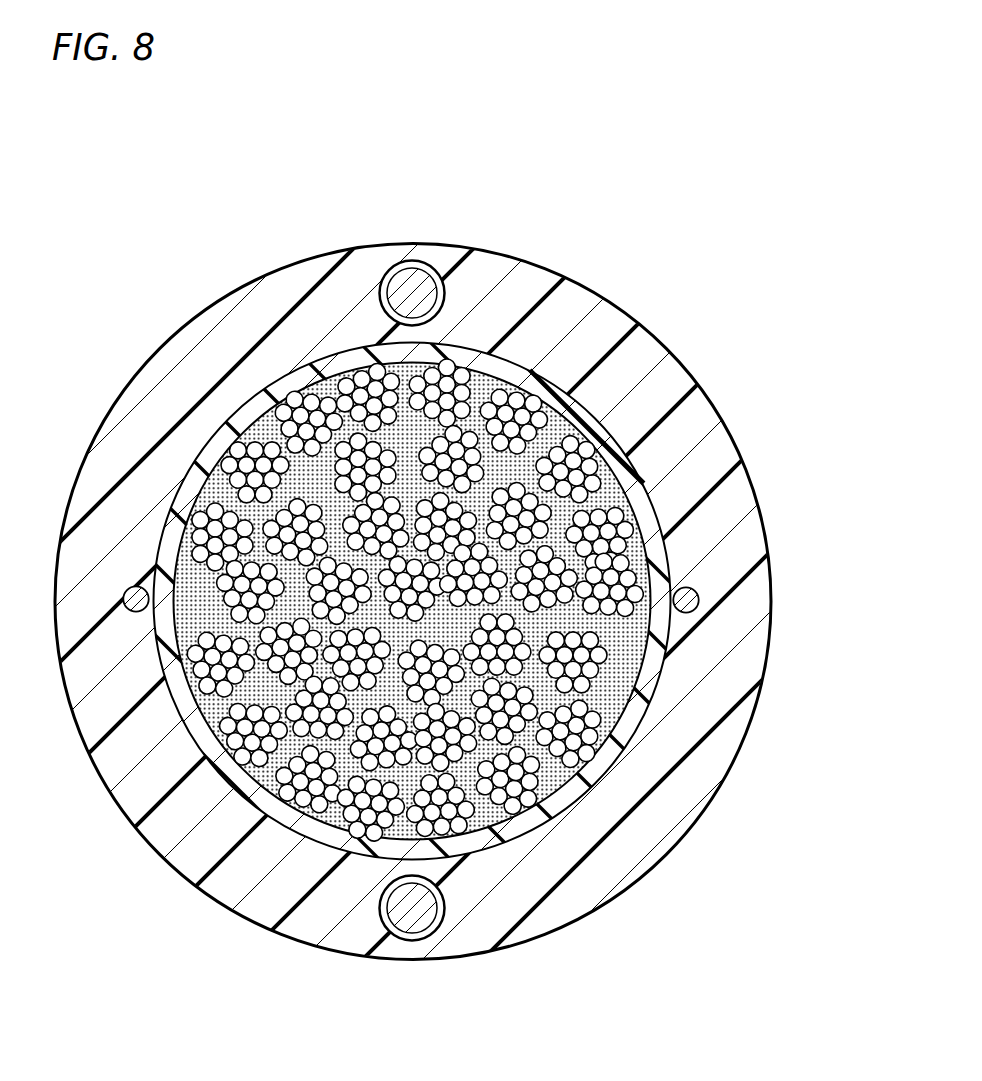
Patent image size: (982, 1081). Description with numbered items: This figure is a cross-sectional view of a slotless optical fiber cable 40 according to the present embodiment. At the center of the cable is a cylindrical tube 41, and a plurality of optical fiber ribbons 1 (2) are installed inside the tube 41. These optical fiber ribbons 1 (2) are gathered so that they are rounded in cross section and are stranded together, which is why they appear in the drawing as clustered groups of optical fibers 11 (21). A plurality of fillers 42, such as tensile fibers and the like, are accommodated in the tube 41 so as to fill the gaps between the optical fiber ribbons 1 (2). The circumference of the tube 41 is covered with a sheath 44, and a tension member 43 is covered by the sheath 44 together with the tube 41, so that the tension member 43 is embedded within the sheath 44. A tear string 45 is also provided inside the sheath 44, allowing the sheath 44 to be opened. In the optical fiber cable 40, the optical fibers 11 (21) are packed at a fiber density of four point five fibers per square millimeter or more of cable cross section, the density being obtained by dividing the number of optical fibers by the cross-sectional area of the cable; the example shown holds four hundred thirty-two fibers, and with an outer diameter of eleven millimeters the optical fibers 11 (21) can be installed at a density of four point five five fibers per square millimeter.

The slotless optical fiber cable 40 is at (491, 565).
The tube 41 is at (473, 354).
The fillers 42 is at (262, 424).
The tension member 43 is at (405, 290).
The sheath 44 is at (717, 443).
The tear string 45 is at (700, 600).
The optical fiber ribbon 1 is at (617, 381).
The optical fiber ribbon 2 is at (552, 398).
The optical fiber 11 is at (482, 630).
The optical fiber 21 is at (530, 769).